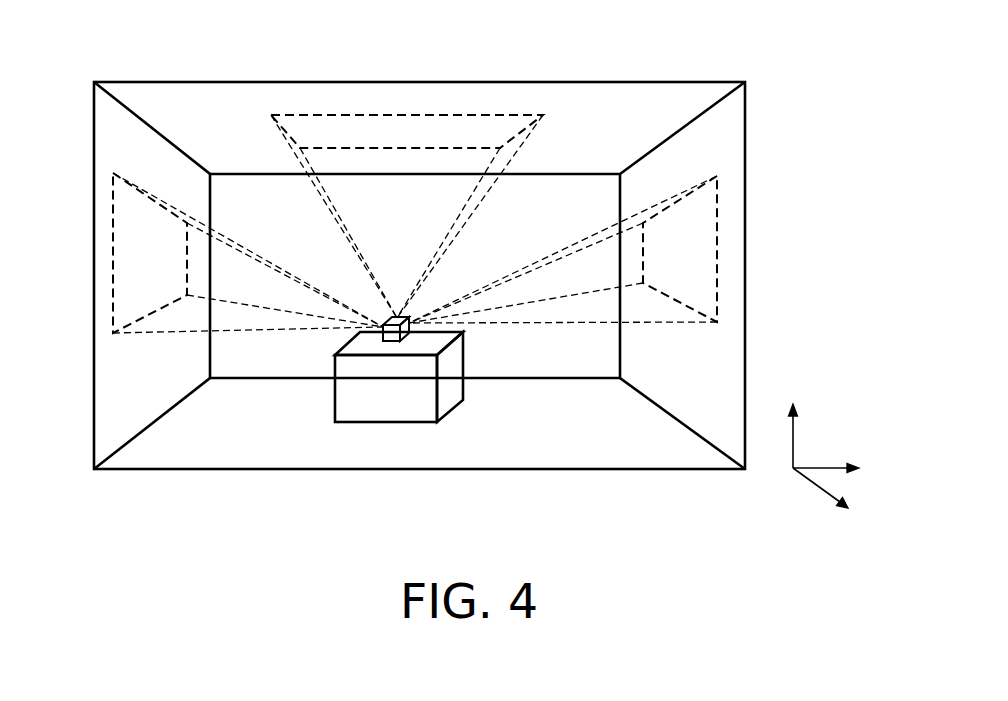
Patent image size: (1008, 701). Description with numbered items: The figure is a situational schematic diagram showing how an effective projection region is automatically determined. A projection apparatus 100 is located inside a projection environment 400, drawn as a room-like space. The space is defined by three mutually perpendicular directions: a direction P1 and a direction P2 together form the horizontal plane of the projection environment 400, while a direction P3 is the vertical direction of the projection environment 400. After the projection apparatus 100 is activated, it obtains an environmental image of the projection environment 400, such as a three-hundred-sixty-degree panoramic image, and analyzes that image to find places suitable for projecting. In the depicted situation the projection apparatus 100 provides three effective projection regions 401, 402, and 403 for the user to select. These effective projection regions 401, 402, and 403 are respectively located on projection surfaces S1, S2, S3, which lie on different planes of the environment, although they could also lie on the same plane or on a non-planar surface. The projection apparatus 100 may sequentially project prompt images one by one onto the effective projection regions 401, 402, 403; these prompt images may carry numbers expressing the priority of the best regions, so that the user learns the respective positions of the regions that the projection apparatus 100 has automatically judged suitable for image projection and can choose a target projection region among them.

The projection environment 400 is at (749, 520).
The projection surface S1 is at (125, 143).
The projection surface S2 is at (204, 110).
The projection surface S3 is at (700, 149).
The effective projection region 401 is at (113, 242).
The effective projection region 402 is at (407, 113).
The effective projection region 403 is at (717, 227).
The projection apparatus 100 is at (400, 318).
The direction P1 is at (837, 506).
The direction P2 is at (845, 470).
The direction P3 is at (795, 419).